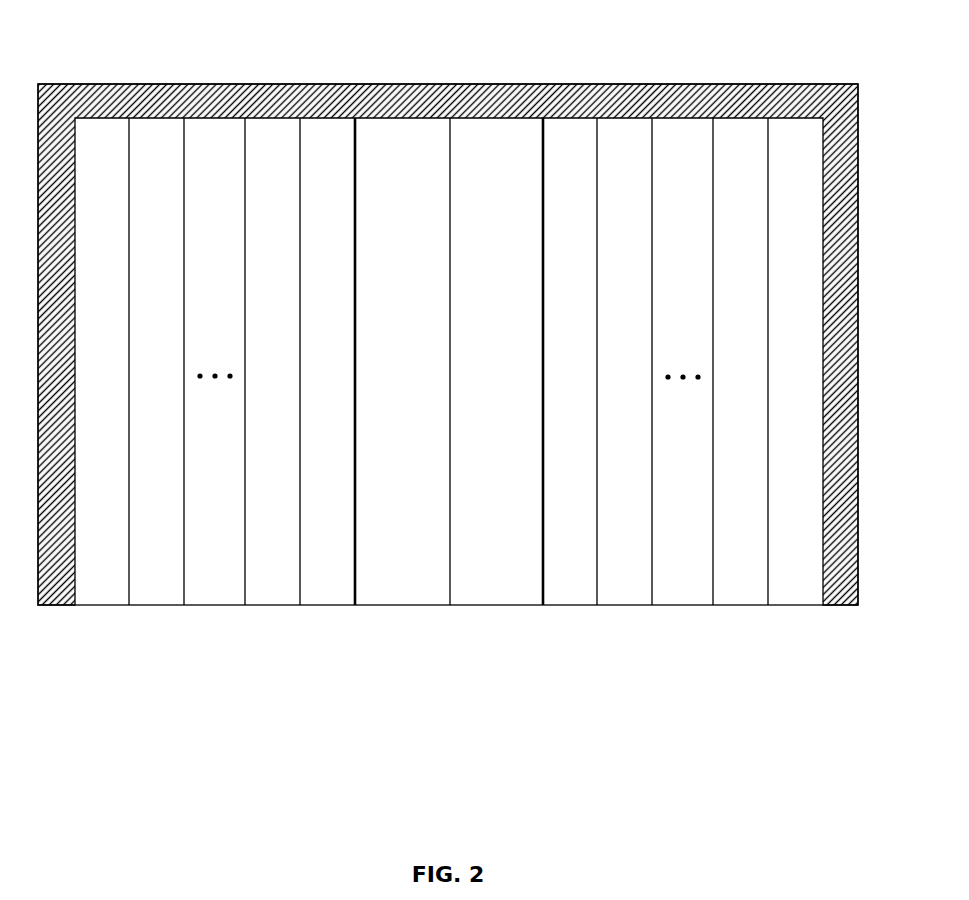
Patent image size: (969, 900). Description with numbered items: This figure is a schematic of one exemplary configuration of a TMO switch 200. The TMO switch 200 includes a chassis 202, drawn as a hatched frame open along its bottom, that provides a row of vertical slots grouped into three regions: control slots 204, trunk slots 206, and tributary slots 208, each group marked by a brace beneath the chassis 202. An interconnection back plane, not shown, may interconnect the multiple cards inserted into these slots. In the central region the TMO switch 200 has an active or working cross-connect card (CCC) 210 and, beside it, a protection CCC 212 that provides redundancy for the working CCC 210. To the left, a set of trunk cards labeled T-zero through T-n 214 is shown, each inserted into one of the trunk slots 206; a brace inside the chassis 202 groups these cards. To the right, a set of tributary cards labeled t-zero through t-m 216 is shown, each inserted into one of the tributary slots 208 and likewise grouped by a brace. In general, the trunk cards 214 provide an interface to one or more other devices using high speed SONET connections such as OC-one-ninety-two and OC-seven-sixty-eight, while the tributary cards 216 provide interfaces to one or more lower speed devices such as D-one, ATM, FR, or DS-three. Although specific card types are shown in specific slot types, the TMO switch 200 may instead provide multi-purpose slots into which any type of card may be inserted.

The TMO switch 200 is at (829, 61).
The chassis 202 is at (226, 84).
The control slots 204 is at (75, 608).
The trunk slots 206 is at (543, 608).
The tributary slots 208 is at (543, 608).
The working cross-connect card (CCC) 210 is at (387, 395).
The protection CCC 212 is at (482, 395).
The trunk cards T0–Tn 214 is at (353, 425).
The tributary cards t0–tm 216 is at (823, 425).